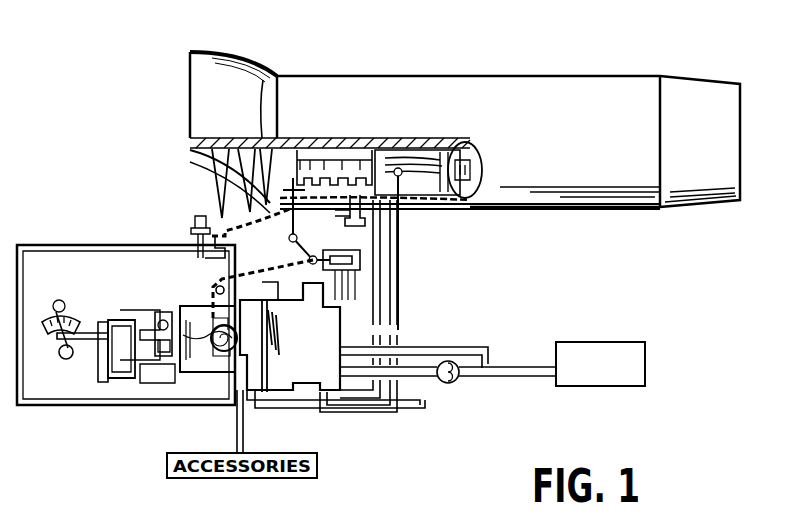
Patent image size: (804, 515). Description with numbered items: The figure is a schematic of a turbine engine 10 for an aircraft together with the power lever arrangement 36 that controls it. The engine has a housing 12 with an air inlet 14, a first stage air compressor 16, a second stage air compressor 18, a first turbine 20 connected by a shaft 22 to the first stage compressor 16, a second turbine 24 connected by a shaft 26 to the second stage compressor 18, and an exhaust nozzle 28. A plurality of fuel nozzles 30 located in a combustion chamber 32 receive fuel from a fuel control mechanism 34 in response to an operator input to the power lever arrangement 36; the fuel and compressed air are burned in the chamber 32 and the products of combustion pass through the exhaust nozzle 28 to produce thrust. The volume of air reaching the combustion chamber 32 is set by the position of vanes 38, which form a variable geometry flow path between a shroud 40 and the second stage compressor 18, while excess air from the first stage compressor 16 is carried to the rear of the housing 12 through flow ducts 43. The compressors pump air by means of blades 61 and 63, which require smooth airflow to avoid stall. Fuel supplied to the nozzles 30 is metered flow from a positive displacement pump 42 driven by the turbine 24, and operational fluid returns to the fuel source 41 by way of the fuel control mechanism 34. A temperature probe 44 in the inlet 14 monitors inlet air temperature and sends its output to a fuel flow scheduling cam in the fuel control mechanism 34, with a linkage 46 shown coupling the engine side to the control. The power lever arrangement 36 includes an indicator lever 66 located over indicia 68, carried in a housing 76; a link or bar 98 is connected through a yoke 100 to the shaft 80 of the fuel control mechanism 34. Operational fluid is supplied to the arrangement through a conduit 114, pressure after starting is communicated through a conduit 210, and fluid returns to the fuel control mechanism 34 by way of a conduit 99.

The turbine engine 10 is at (433, 57).
The housing 12 is at (233, 62).
The air inlet 14 is at (236, 186).
The first stage air compressor 16 is at (272, 76).
The second stage air compressor 18 is at (325, 150).
The first turbine 20 is at (483, 150).
The shaft 22 is at (405, 150).
The second turbine 24 is at (480, 165).
The shaft 26 is at (436, 155).
The exhaust nozzle 28 is at (755, 163).
The fuel nozzles 30 is at (432, 198).
The combustion chamber 32 is at (450, 200).
The fuel control mechanism 34 is at (232, 403).
The power lever arrangement 36 is at (78, 300).
The vanes 38 is at (296, 220).
The shroud 40 is at (417, 198).
The fuel source 41 is at (640, 357).
The positive displacement pump 42 is at (458, 380).
The flow ducts 43 is at (365, 207).
The temperature probe 44 is at (195, 218).
The linkage 46 is at (225, 236).
The blades 61 is at (236, 197).
The blades 63 is at (235, 168).
The indicator lever 66 is at (57, 298).
The indicia 68 is at (51, 343).
The housing 76 is at (100, 372).
The shaft 80 is at (160, 310).
The link or bar 98 is at (156, 350).
The conduit 99 is at (122, 312).
The yoke 100 is at (176, 312).
The conduit 114 is at (205, 372).
The conduit 210 is at (132, 318).